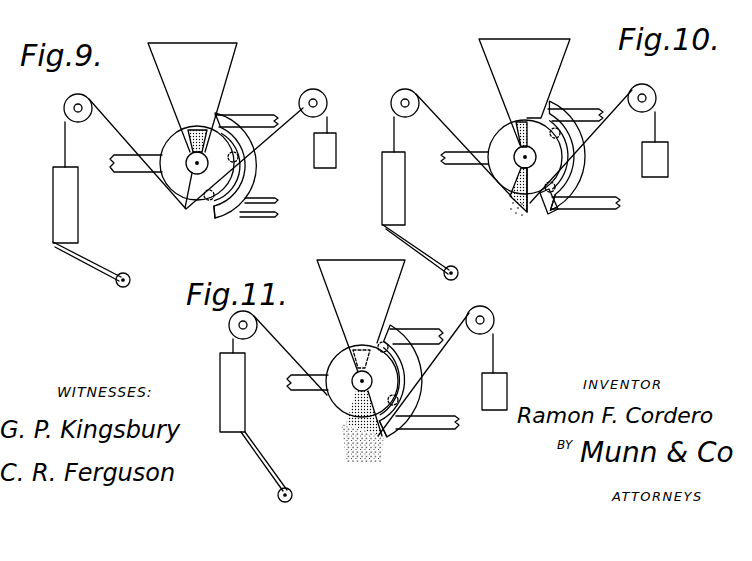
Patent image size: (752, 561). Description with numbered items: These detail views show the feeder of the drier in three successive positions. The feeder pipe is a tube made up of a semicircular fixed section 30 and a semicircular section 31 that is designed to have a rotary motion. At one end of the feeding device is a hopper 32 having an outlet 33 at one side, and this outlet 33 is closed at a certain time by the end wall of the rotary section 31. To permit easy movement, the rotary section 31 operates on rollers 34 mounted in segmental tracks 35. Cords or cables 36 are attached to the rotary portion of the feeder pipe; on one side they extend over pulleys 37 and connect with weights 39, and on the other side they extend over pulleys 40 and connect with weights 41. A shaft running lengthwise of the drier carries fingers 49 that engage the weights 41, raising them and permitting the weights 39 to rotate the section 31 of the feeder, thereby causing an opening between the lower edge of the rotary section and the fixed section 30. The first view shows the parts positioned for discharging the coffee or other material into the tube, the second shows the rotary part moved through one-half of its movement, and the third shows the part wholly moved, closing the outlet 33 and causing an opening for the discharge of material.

In FIG. 9, the semicircular fixed section 30 is at (176, 178).
In FIG. 10, the semicircular fixed section 30 is at (491, 138).
In FIG. 11, the semicircular fixed section 30 is at (345, 397).
In FIG. 9, the semicircular rotary section 31 is at (236, 179).
In FIG. 10, the semicircular rotary section 31 is at (563, 155).
In FIG. 11, the semicircular rotary section 31 is at (396, 383).
In FIG. 9, the hopper 32 is at (237, 43).
In FIG. 10, the hopper 32 is at (548, 39).
In FIG. 11, the hopper 32 is at (361, 316).
In FIG. 9, the outlet 33 is at (188, 134).
In FIG. 10, the outlet 33 is at (521, 122).
In FIG. 11, the outlet 33 is at (363, 406).
In FIG. 9, the rollers 34 is at (208, 200).
In FIG. 10, the rollers 34 is at (553, 204).
In FIG. 11, the rollers 34 is at (388, 373).
In FIG. 9, the segmental tracks 35 is at (233, 216).
In FIG. 10, the segmental tracks 35 is at (587, 167).
In FIG. 11, the segmental tracks 35 is at (391, 437).
In FIG. 9, the cords or cables 36 is at (267, 127).
In FIG. 10, the cords or cables 36 is at (596, 138).
In FIG. 11, the cords or cables 36 is at (288, 350).
In FIG. 9, the pulleys 37 is at (325, 94).
In FIG. 10, the pulleys 37 is at (657, 91).
In FIG. 11, the pulleys 37 is at (492, 318).
In FIG. 9, the weights 39 is at (336, 148).
In FIG. 10, the weights 39 is at (668, 160).
In FIG. 11, the weights 39 is at (505, 373).
In FIG. 9, the pulleys 40 is at (64, 108).
In FIG. 10, the pulleys 40 is at (411, 90).
In FIG. 11, the pulleys 40 is at (252, 317).
In FIG. 9, the weights 41 is at (53, 198).
In FIG. 10, the weights 41 is at (405, 190).
In FIG. 11, the weights 41 is at (220, 382).
In FIG. 9, the fingers 49 is at (112, 258).
In FIG. 10, the fingers 49 is at (427, 248).
In FIG. 11, the fingers 49 is at (270, 467).